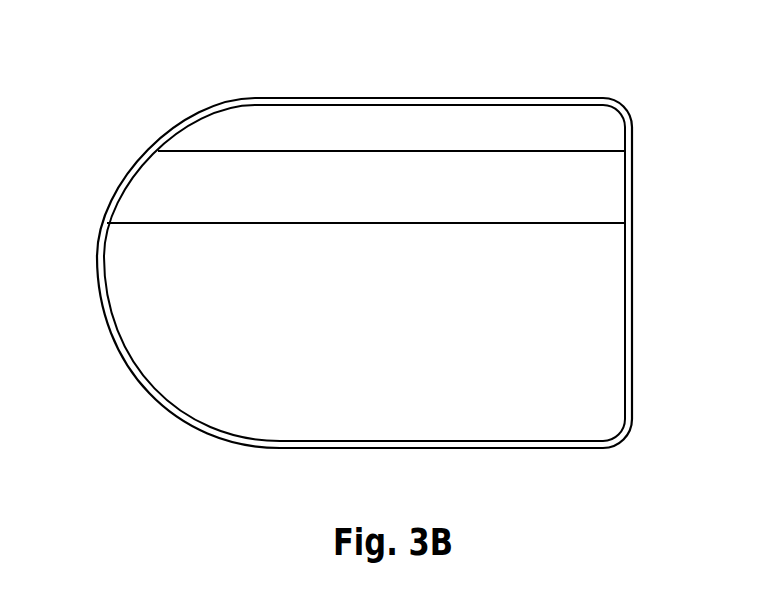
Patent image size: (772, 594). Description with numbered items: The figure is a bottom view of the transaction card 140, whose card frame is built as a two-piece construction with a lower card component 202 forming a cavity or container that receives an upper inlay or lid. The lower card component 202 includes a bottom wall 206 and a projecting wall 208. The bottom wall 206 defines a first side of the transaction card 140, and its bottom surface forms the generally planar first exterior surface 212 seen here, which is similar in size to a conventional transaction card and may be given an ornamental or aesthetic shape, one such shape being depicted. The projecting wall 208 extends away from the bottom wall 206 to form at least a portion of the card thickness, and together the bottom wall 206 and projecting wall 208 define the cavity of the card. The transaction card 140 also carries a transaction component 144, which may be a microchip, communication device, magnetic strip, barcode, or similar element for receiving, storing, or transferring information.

The transaction card 140 is at (159, 85).
The transaction component 144 is at (612, 190).
The first exterior surface 212 is at (612, 260).
The lower card component 202 is at (121, 288).
The bottom wall 206 is at (143, 383).
The projecting wall 208 is at (633, 378).